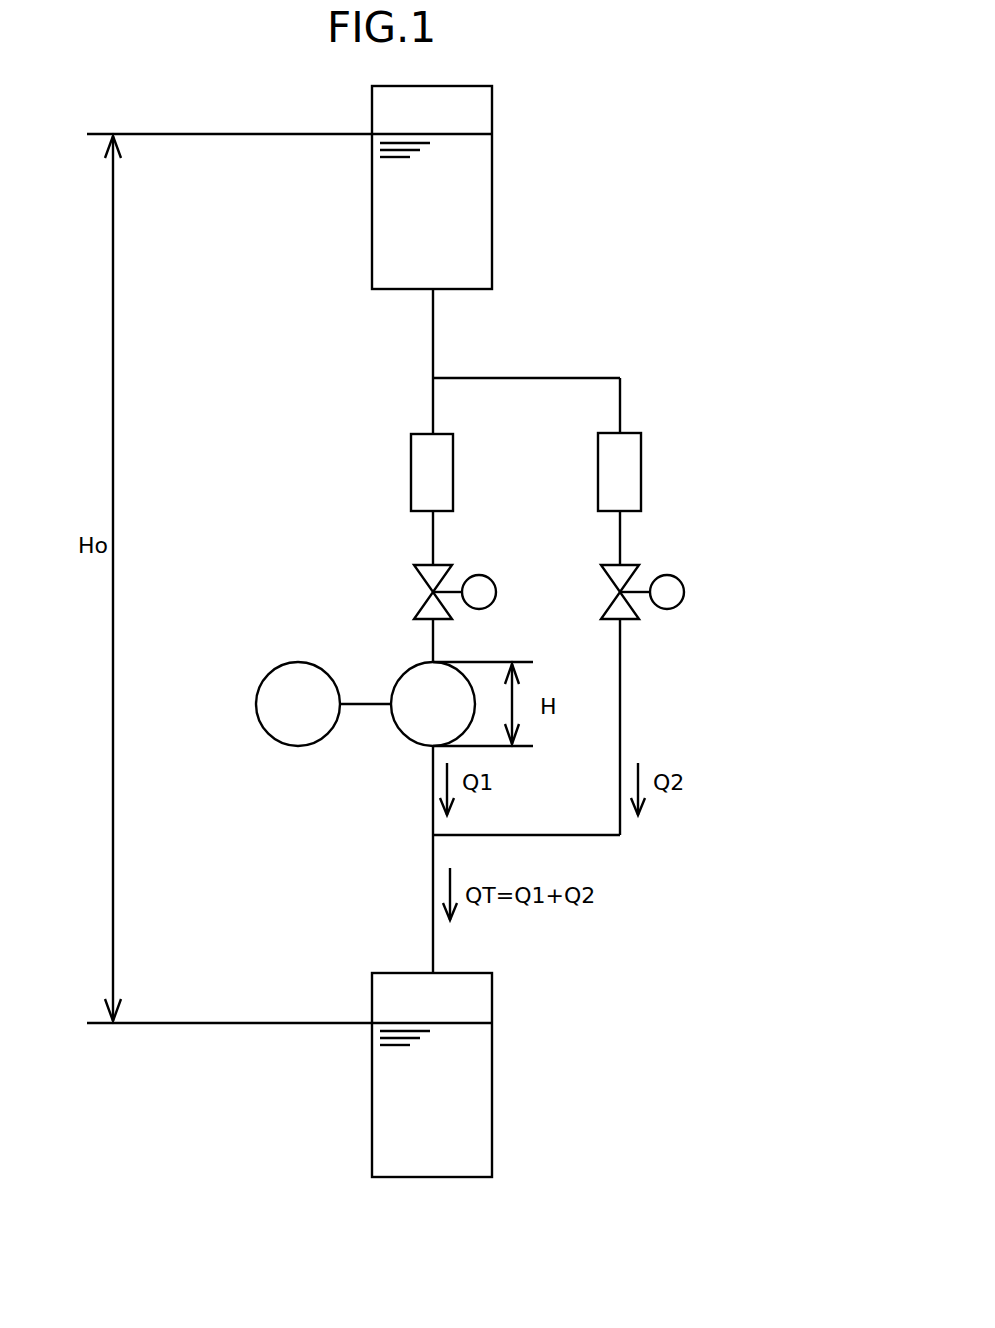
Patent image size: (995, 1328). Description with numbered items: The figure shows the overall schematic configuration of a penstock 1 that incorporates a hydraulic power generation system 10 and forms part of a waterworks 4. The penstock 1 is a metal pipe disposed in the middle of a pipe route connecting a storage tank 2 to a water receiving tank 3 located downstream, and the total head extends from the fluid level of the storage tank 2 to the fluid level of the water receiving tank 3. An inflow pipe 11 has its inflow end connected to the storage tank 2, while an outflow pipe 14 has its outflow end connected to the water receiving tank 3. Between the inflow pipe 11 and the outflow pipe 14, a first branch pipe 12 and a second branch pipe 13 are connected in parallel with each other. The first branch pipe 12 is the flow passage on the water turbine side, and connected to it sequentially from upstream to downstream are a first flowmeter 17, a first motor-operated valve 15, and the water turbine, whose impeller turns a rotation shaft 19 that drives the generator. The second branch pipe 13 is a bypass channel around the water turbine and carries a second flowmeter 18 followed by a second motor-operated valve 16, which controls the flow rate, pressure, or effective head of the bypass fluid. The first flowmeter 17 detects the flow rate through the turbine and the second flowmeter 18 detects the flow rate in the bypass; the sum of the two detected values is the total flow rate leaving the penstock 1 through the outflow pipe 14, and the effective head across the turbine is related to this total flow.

The penstock 1 is at (575, 378).
The storage tank 2 is at (492, 249).
The water receiving tank 3 is at (492, 1140).
The waterworks 4 is at (346, 238).
The hydraulic power generation system 10 is at (633, 226).
The inflow pipe 11 is at (433, 337).
The first branch pipe 12 is at (433, 541).
The second branch pipe 13 is at (620, 541).
The outflow pipe 14 is at (433, 920).
The first motor-operated valve 15 is at (447, 619).
The second motor-operated valve 16 is at (635, 619).
The first flowmeter 17 is at (411, 450).
The second flowmeter 18 is at (641, 450).
The rotation shaft 19 is at (366, 706).